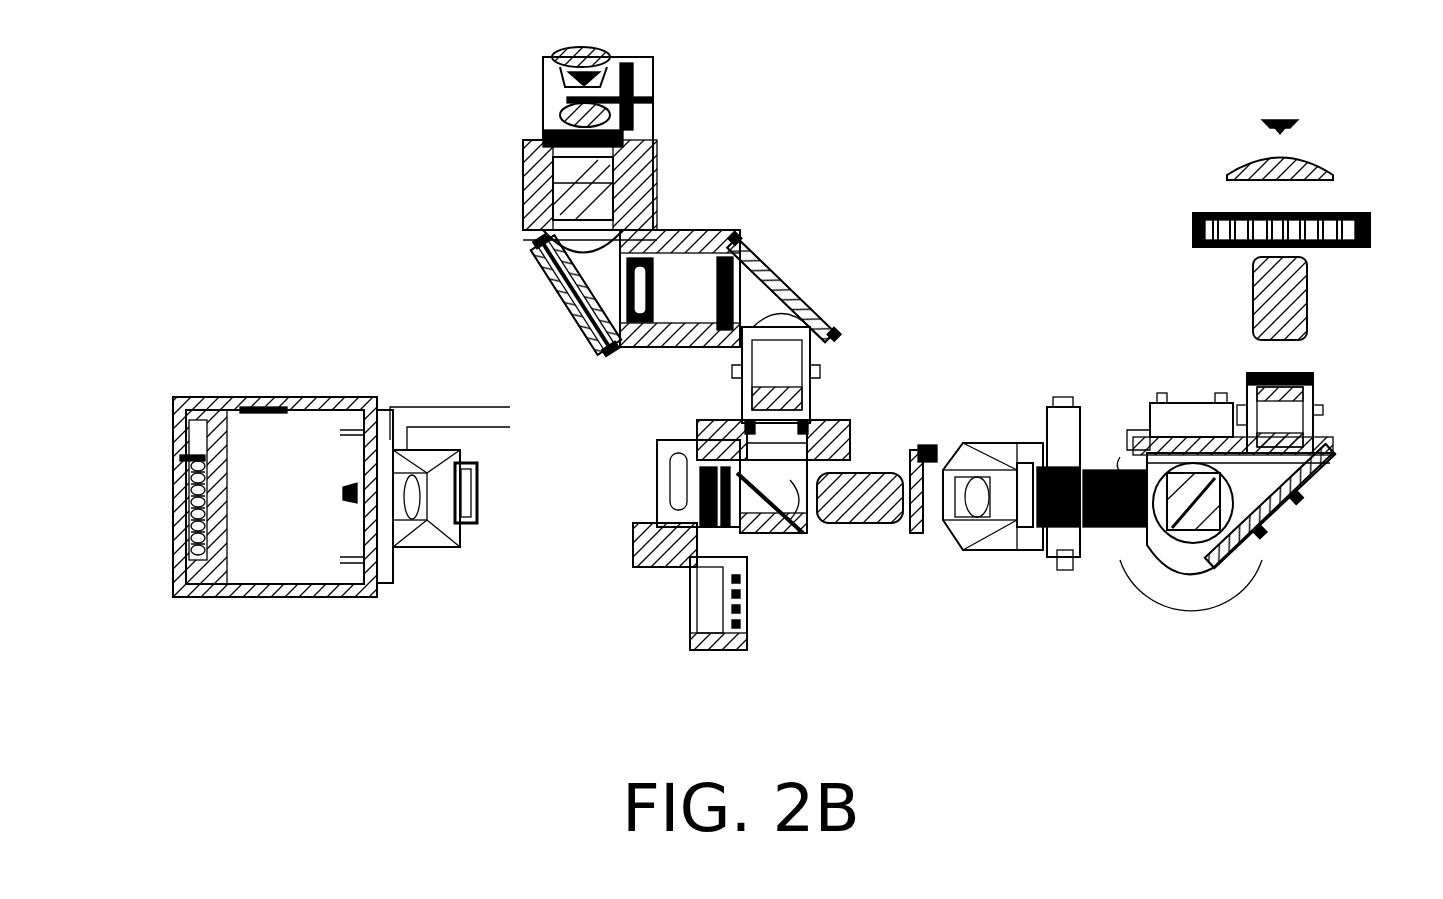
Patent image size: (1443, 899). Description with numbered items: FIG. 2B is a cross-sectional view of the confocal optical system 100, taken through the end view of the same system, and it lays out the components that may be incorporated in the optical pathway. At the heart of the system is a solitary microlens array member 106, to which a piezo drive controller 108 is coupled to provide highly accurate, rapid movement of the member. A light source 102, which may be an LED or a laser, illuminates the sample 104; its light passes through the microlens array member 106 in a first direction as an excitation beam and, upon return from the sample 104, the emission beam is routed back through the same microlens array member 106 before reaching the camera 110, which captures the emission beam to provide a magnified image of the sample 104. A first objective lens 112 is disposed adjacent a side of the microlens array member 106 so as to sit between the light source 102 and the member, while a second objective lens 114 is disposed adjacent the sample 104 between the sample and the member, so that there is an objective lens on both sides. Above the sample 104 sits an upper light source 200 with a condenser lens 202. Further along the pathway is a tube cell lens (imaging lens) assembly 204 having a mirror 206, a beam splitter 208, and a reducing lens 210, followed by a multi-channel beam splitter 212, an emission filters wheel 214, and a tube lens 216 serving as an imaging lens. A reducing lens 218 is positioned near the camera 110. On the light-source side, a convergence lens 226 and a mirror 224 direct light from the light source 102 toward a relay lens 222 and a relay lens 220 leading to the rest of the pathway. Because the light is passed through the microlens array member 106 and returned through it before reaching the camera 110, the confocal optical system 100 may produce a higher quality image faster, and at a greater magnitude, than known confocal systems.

The confocal optical system 100 is at (858, 108).
The light source 102 is at (580, 80).
The sample 104 is at (1200, 215).
The microlens array member 106 is at (910, 523).
The piezo drive controller 108 is at (925, 447).
The camera 110 is at (188, 505).
The first objective lens 112 is at (860, 520).
The second objective lens 114 is at (1257, 317).
The upper light source 200 is at (1265, 120).
The condenser lens 202 is at (1237, 165).
The tube cell lens assembly 204 is at (1253, 373).
The mirror 206 is at (1300, 497).
The beam splitter 208 is at (1197, 510).
The reducing lens 210 is at (977, 497).
The multi-channel beam splitter 212 is at (793, 520).
The emission filters wheel 214 is at (737, 520).
The tube lens 216 is at (693, 523).
The reducing lens 218 is at (408, 480).
The relay lens 220 is at (753, 400).
The relay lens 222 is at (627, 303).
The mirror 224 is at (570, 297).
The convergence lens 226 is at (560, 115).